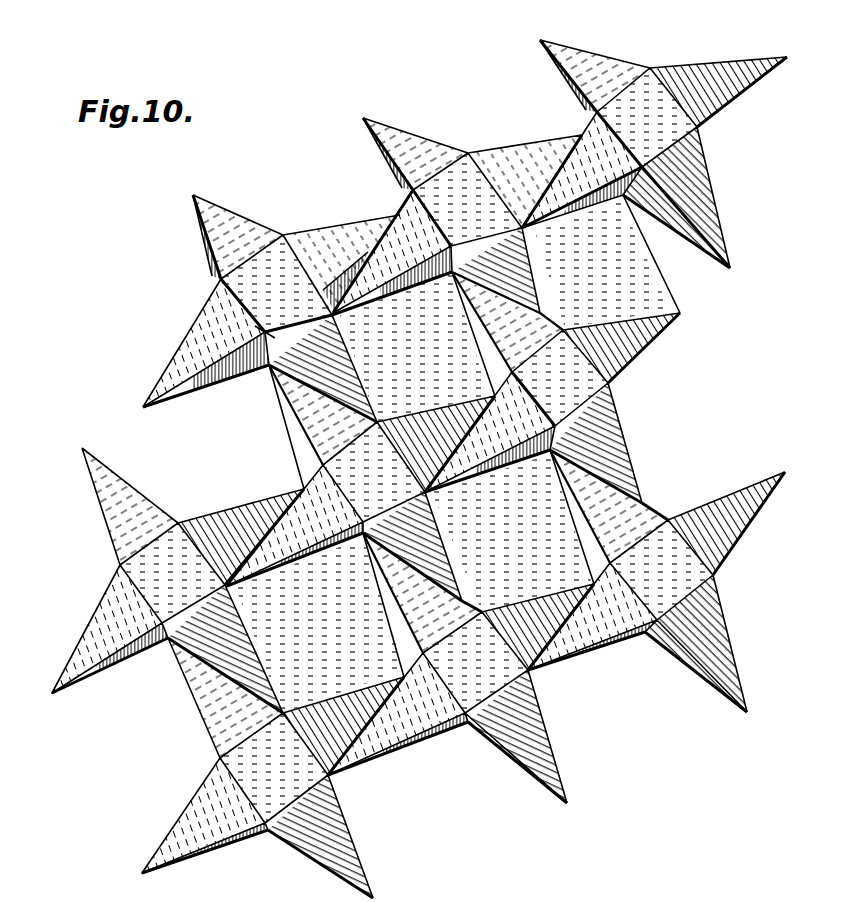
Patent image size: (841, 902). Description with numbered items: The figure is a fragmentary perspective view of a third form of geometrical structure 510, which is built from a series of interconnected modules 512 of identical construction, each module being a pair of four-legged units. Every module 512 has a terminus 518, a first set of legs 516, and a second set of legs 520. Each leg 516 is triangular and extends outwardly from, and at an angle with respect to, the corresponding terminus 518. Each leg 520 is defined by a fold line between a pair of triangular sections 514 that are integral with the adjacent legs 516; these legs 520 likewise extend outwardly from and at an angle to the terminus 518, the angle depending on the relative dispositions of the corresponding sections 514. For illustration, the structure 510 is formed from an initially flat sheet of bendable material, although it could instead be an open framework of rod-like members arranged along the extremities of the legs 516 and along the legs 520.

The geometrical structure 510 is at (152, 326).
The module 512 is at (287, 228).
The triangular section 514 is at (208, 390).
The leg 516 is at (358, 236).
The terminus 518 is at (288, 246).
The leg 520 is at (258, 350).